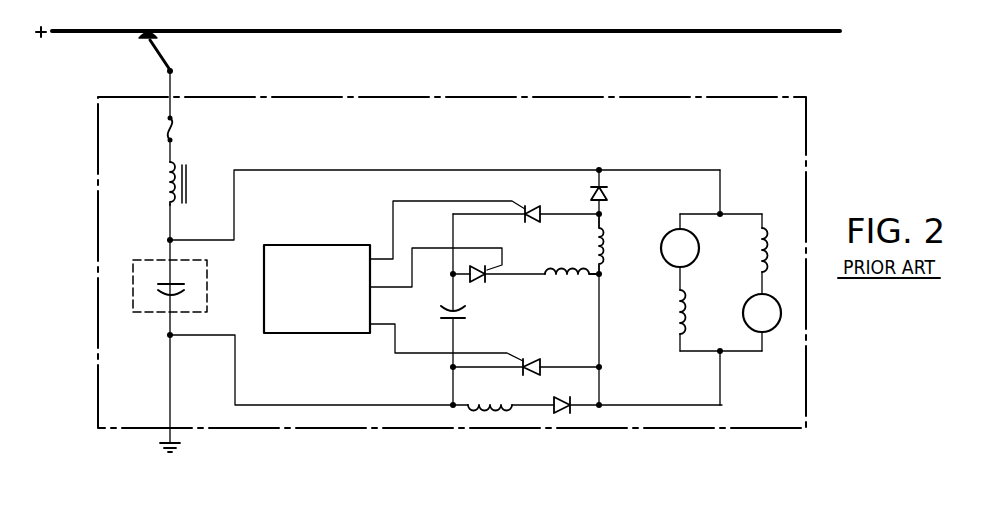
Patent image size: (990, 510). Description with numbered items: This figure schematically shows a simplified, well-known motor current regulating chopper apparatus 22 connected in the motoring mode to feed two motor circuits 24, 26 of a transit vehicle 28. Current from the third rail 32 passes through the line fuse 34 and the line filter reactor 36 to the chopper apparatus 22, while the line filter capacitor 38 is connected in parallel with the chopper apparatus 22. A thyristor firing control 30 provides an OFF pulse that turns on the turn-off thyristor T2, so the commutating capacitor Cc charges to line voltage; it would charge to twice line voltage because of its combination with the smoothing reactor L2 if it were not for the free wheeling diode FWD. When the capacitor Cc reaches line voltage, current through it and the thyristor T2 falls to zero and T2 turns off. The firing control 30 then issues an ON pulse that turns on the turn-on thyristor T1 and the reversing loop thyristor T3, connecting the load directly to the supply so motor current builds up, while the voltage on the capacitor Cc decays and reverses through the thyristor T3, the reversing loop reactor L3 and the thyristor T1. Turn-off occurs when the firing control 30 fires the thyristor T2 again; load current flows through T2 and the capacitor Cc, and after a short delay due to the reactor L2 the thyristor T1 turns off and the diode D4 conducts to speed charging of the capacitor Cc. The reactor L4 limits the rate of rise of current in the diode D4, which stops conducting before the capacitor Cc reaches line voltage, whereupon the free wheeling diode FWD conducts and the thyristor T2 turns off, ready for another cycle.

The chopper apparatus 22 is at (391, 202).
The motor circuit 24 is at (672, 299).
The motor circuit 26 is at (795, 291).
The vehicle 28 is at (128, 95).
The thyristor firing control 30 is at (302, 243).
The third rail 32 is at (115, 36).
The line fuse 34 is at (174, 131).
The line filter reactor 36 is at (180, 158).
The line filter capacitor 38 is at (158, 256).
The turn-on thyristor T1 is at (530, 358).
The turn-off thyristor T2 is at (533, 200).
The reversing loop thyristor T3 is at (481, 282).
The free wheeling diode FWD is at (611, 191).
The smoothing reactor L2 is at (597, 230).
The reversing loop reactor L3 is at (561, 281).
The reactor L4 is at (493, 401).
The diode D4 is at (557, 399).
The commutating capacitor Cc is at (472, 314).